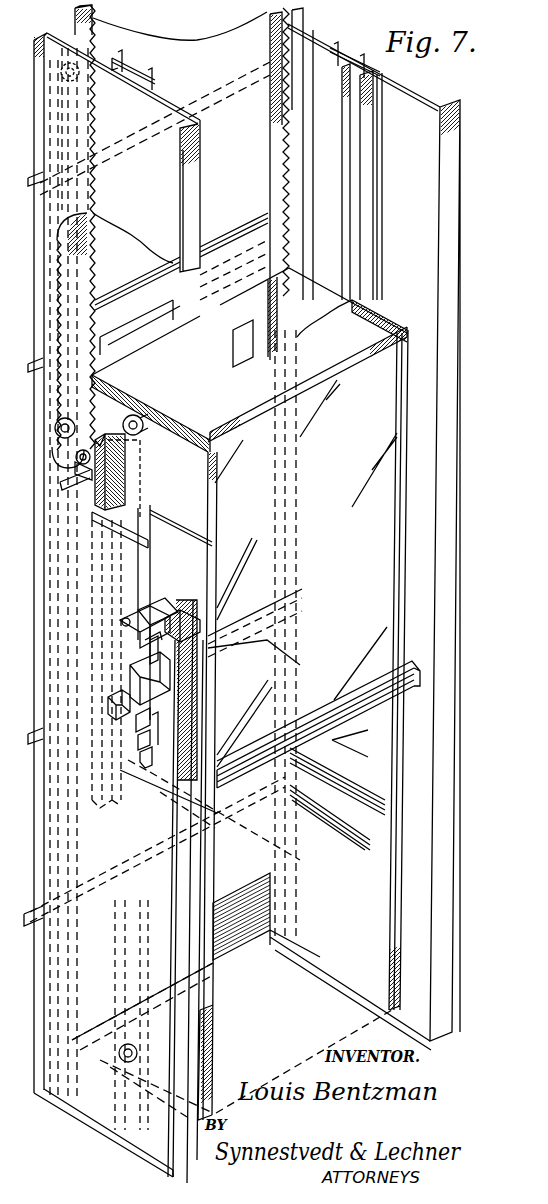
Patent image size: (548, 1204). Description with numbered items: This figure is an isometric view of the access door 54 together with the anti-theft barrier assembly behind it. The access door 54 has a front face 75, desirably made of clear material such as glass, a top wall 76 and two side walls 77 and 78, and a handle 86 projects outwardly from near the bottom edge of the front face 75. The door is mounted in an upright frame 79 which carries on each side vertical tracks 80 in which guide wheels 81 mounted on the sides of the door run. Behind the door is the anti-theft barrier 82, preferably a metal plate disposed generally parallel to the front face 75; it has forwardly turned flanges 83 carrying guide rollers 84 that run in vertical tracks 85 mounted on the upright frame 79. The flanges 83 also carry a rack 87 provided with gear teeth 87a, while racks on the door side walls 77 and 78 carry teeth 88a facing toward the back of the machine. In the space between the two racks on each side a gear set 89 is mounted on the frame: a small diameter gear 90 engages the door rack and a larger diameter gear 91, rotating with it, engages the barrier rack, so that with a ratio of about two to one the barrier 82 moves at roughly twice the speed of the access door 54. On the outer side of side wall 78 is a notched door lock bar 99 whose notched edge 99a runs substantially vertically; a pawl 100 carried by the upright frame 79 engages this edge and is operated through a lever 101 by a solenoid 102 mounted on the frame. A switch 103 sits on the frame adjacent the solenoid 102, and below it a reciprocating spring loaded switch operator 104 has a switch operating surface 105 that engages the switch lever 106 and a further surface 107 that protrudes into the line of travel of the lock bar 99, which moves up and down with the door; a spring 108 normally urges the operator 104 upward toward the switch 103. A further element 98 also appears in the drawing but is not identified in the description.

The access door 54 is at (420, 380).
The front face 75 is at (385, 510).
The top wall 76 is at (375, 320).
The side wall 77 is at (385, 735).
The side wall 78 is at (92, 390).
The upright frame 79 is at (165, 92).
The vertical tracks 80 is at (125, 60).
The guide wheels 81 is at (146, 419).
The anti-theft barrier 82 is at (136, 33).
The forwardly turned flanges 83 is at (75, 16).
The guide rollers 84 is at (62, 78).
The vertical tracks 85 is at (70, 40).
The handle 86 is at (395, 710).
The rack 87 is at (94, 270).
The gear teeth 87a is at (89, 283).
The teeth 88a is at (58, 482).
The gear set 89 is at (76, 452).
The small diameter gear 90 is at (74, 465).
The larger diameter gear 91 is at (108, 432).
The cross bar 98 is at (90, 512).
The notched door lock bar 99 is at (165, 618).
The notched edge 99a is at (187, 624).
The pawl 100 is at (148, 605).
The lever 101 is at (125, 630).
The solenoid 102 is at (140, 662).
The switch 103 is at (108, 698).
The switch operator 104 is at (138, 754).
The switch operating surface 105 is at (136, 738).
The switch lever 106 is at (135, 722).
The surface 107 is at (162, 728).
The spring 108 is at (130, 762).